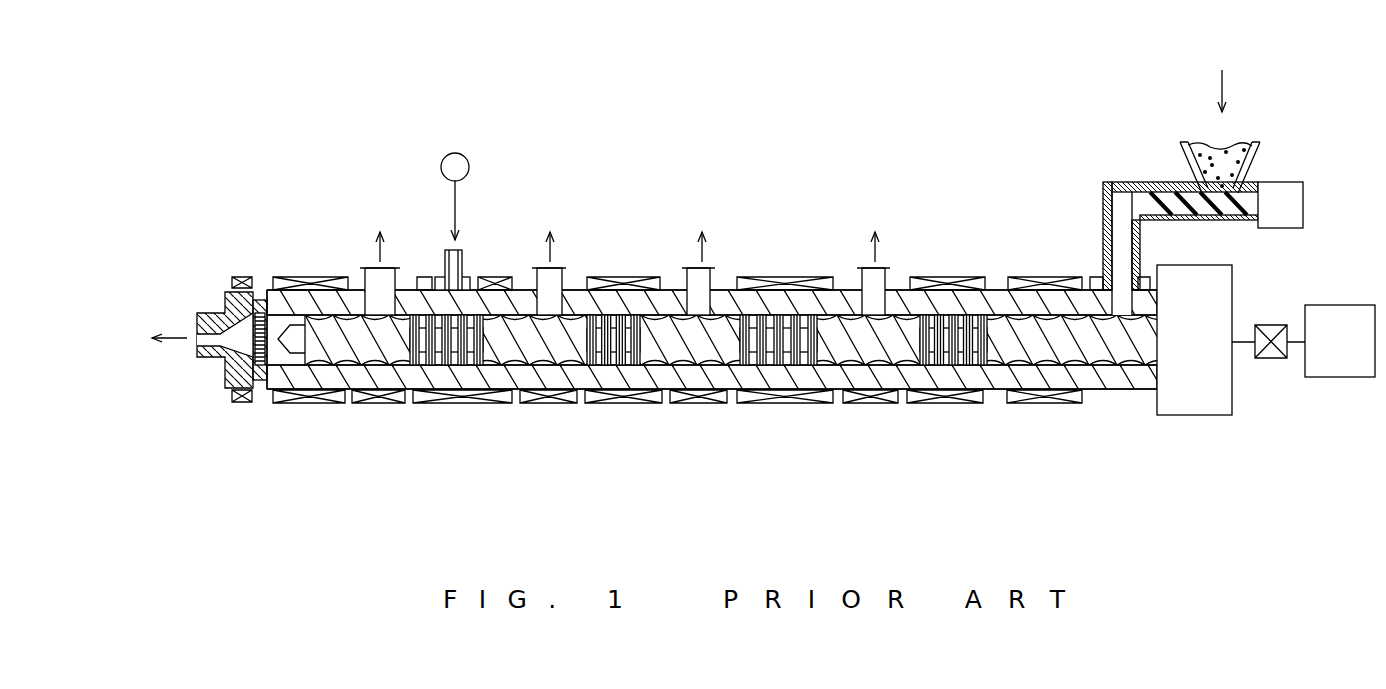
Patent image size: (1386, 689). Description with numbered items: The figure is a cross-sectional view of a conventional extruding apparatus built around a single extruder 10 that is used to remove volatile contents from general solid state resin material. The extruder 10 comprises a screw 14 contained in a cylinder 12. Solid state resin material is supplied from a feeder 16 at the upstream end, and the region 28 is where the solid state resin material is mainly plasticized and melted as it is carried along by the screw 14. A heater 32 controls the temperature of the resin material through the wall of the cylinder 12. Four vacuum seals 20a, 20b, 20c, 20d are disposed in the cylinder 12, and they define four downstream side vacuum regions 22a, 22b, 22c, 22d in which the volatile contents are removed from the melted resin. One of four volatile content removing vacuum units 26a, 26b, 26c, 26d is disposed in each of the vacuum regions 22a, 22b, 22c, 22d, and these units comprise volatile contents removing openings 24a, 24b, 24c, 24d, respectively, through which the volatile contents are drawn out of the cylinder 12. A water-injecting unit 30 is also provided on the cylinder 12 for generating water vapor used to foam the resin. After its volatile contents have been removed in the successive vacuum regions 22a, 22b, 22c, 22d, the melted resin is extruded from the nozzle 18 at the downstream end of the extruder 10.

The extruder 10 is at (822, 115).
The cylinder 12 is at (1143, 386).
The screw 14 is at (1013, 387).
The feeder 16 is at (1274, 127).
The nozzle 18 is at (221, 282).
The vacuum seal 20a is at (950, 366).
The vacuum seal 20b is at (783, 366).
The vacuum seal 20c is at (616, 366).
The vacuum seal 20d is at (441, 366).
The vacuum region 22a is at (862, 376).
The vacuum region 22b is at (692, 376).
The vacuum region 22c is at (530, 376).
The vacuum region 22d is at (337, 376).
The volatile contents removing opening 24a is at (889, 276).
The volatile contents removing opening 24b is at (714, 276).
The volatile contents removing opening 24c is at (565, 276).
The volatile contents removing opening 24d is at (362, 285).
The volatile content removing vacuum unit 26a is at (861, 250).
The volatile content removing vacuum unit 26b is at (687, 250).
The volatile content removing vacuum unit 26c is at (536, 250).
The volatile content removing vacuum unit 26d is at (366, 252).
The plasticizing and melting region 28 is at (1063, 277).
The water-injecting unit 30 is at (463, 144).
The heater 32 is at (1073, 405).